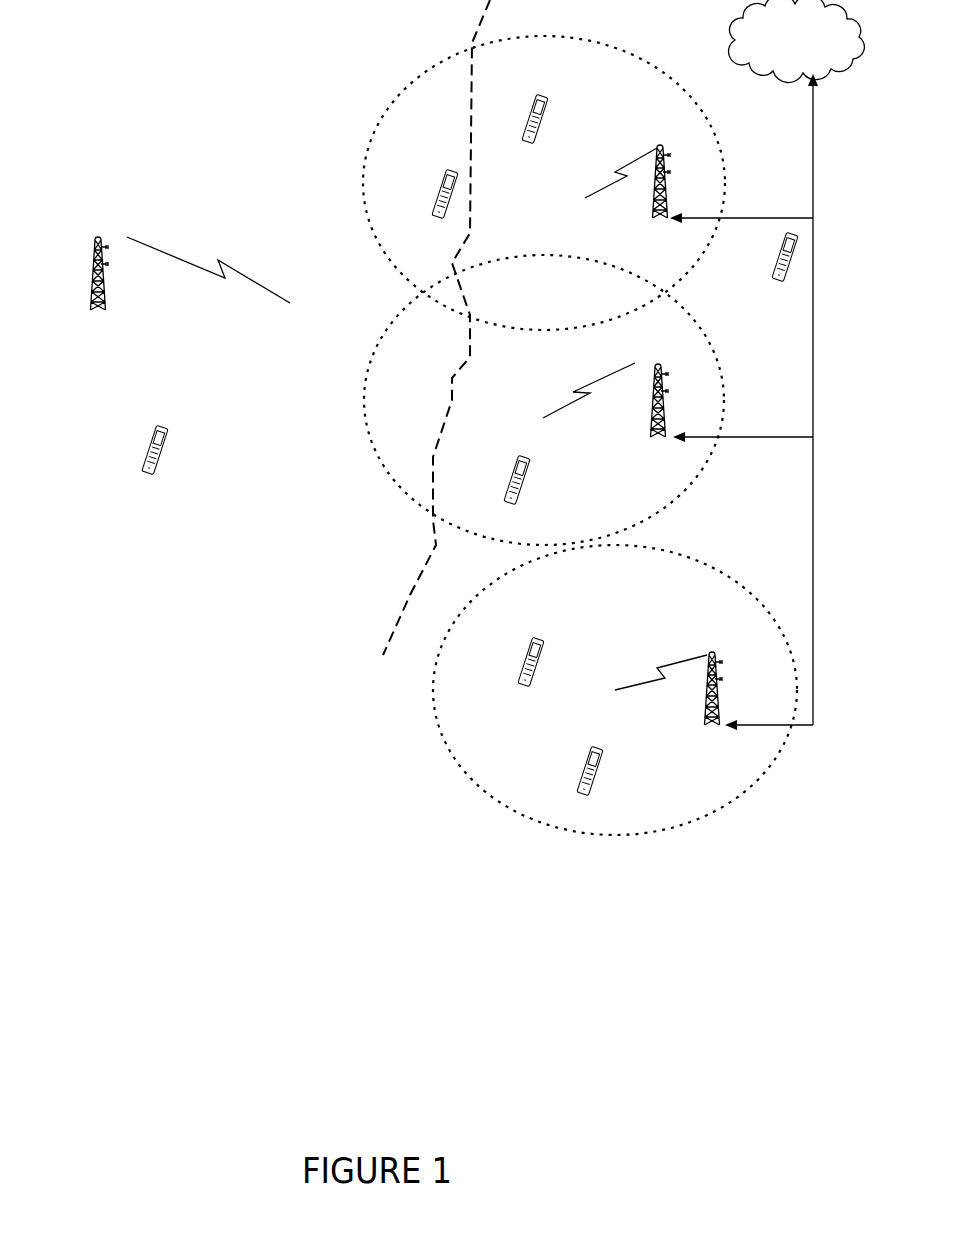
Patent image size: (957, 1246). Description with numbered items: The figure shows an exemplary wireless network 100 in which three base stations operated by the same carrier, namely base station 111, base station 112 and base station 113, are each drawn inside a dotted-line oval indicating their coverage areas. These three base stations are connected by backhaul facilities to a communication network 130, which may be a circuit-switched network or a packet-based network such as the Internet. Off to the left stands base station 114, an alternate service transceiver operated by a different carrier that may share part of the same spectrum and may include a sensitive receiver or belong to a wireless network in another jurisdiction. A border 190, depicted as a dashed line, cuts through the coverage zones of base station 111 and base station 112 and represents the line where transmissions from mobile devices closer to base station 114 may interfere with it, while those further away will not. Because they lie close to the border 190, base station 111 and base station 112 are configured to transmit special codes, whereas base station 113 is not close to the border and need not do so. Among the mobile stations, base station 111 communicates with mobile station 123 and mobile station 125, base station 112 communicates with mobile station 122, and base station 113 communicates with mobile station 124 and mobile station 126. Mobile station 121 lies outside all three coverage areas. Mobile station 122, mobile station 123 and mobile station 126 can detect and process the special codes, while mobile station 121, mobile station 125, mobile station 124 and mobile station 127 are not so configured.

The wireless network 100 is at (240, 818).
The base station 111 is at (652, 218).
The base station 112 is at (652, 437).
The base station 113 is at (705, 725).
The base station 114 is at (93, 310).
The mobile station 121 is at (160, 473).
The mobile station 122 is at (523, 478).
The mobile station 123 is at (433, 193).
The mobile station 124 is at (577, 790).
The mobile station 125 is at (525, 138).
The mobile station 126 is at (523, 682).
The mobile station 127 is at (775, 277).
The communication network 130 is at (728, 33).
The border 190 is at (410, 593).